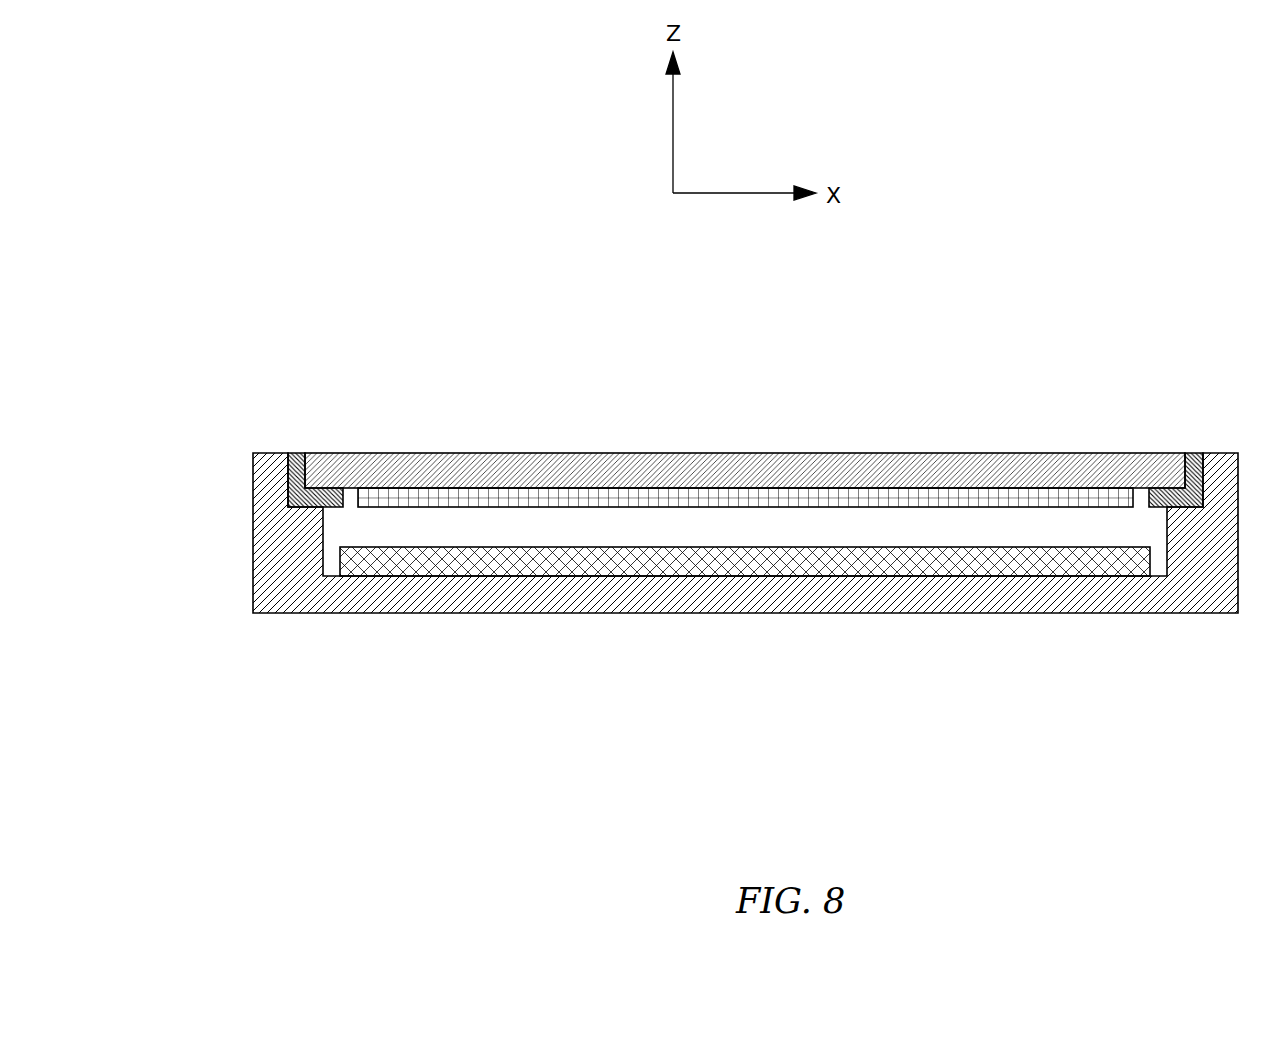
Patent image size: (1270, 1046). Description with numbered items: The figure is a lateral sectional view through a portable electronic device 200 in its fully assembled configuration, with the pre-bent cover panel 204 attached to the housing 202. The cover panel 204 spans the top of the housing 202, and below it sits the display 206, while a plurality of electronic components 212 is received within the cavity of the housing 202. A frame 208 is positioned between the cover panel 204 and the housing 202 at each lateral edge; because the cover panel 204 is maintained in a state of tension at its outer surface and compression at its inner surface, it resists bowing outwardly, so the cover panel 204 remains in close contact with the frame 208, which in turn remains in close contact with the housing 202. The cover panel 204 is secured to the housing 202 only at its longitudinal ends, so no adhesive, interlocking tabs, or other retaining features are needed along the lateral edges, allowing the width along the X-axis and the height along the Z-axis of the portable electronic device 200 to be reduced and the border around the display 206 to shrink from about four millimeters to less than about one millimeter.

The portable electronic device 200 is at (307, 326).
The housing 202 is at (252, 578).
The cover panel 204 is at (675, 453).
The display 206 is at (938, 507).
The frame 208 is at (297, 455).
The electronic components 212 is at (533, 547).